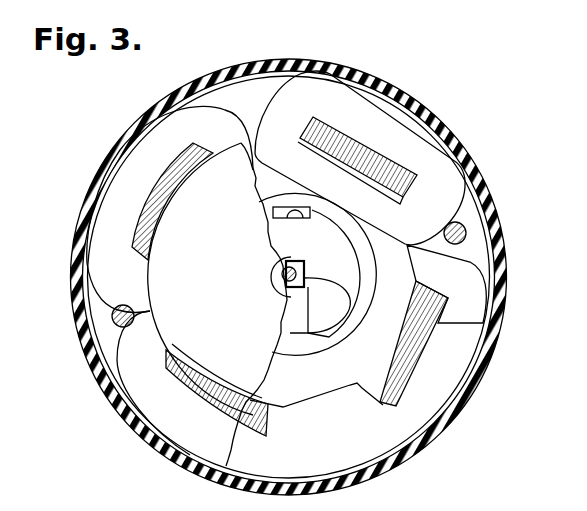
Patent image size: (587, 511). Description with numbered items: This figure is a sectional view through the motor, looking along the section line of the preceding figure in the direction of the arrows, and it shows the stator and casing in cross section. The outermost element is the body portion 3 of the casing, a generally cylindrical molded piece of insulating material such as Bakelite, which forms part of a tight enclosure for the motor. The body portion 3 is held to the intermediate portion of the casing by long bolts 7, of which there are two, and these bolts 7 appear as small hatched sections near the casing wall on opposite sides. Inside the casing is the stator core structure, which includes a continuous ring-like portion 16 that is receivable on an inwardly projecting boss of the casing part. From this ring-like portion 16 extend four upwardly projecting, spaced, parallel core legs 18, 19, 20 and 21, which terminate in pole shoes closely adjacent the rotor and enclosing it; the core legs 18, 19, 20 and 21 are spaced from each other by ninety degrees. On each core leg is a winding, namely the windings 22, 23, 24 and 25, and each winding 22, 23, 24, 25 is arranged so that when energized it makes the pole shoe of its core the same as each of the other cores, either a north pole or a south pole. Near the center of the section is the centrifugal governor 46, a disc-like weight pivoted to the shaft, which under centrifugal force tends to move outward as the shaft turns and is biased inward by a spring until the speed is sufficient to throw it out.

The body portion 3 is at (450, 413).
The long bolts 7 is at (110, 322).
The continuous ring-like portion 16 is at (330, 390).
The core leg 18 is at (142, 208).
The core leg 19 is at (382, 140).
The core leg 20 is at (423, 365).
The core leg 21 is at (205, 407).
The winding 22 is at (102, 271).
The winding 23 is at (447, 162).
The winding 24 is at (480, 308).
The winding 25 is at (143, 405).
The centrifugal governor 46 is at (363, 279).